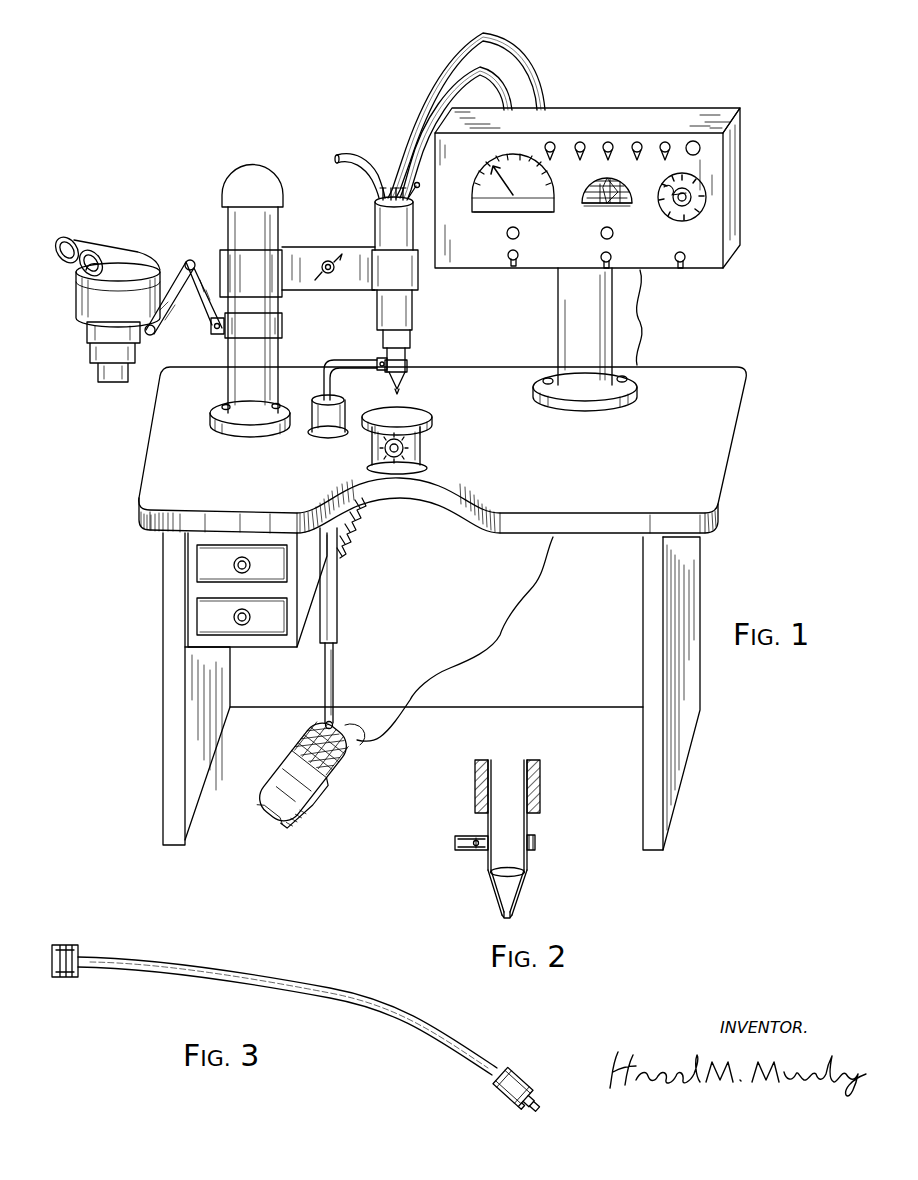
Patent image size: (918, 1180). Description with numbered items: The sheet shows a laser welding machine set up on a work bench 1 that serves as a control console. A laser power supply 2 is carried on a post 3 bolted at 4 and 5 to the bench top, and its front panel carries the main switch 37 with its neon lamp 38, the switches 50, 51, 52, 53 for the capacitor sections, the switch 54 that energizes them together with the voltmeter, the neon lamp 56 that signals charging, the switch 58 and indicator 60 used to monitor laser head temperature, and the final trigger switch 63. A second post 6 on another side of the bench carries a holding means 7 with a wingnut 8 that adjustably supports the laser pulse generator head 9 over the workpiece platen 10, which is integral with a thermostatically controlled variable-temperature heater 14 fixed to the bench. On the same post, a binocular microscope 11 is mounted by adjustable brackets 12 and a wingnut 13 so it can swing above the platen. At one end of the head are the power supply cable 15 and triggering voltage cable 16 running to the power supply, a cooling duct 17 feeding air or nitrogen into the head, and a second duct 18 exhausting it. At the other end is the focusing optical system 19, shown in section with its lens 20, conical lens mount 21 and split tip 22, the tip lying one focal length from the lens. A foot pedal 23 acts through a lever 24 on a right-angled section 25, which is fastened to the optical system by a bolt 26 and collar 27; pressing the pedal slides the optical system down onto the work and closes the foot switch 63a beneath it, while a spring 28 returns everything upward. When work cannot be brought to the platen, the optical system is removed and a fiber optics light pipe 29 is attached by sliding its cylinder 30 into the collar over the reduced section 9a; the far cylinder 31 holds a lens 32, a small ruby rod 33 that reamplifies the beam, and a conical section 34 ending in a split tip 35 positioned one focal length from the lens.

In FIG. 1, the work bench 1 is at (660, 482).
In FIG. 1, the laser power supply 2 is at (740, 240).
In FIG. 1, the post 3 is at (571, 320).
In FIG. 1, the bolt 4 is at (627, 380).
In FIG. 1, the bolt 5 is at (535, 394).
In FIG. 1, the second post 6 is at (235, 385).
In FIG. 1, the holding means 7 is at (322, 262).
In FIG. 1, the wingnut 8 is at (329, 275).
In FIG. 1, the laser pulse generator head 9 is at (413, 310).
In FIG. 1, the reduced section of laser head 9a is at (410, 338).
In FIG. 2, the reduced section of laser head 9a is at (542, 783).
In FIG. 1, the workpiece platen 10 is at (433, 415).
In FIG. 1, the binocular microscope 11 is at (77, 298).
In FIG. 1, the adjustable brackets 12 is at (183, 262).
In FIG. 1, the wingnut 13 is at (210, 330).
In FIG. 1, the thermostatically controlled variable-temperature heater 14 is at (406, 447).
In FIG. 1, the power supply cable 15 is at (462, 46).
In FIG. 1, the laser triggering voltage cable 16 is at (508, 88).
In FIG. 1, the laser cooling duct 17 is at (357, 160).
In FIG. 1, the second duct 18 is at (419, 193).
In FIG. 1, the laser beam focusing optical system 19 is at (406, 352).
In FIG. 2, the laser beam focusing optical system 19 is at (531, 822).
In FIG. 2, the lens 20 is at (520, 877).
In FIG. 1, the conical lens mount 21 is at (404, 380).
In FIG. 1, the split tip 22 is at (401, 391).
In FIG. 2, the split tip 22 is at (513, 916).
In FIG. 1, the foot pedal 23 is at (298, 753).
In FIG. 1, the lever 24 is at (336, 595).
In FIG. 1, the right-angled section 25 is at (334, 388).
In FIG. 2, the right-angled section 25 is at (468, 853).
In FIG. 1, the bolt 26 is at (378, 359).
In FIG. 1, the collar 27 is at (408, 366).
In FIG. 2, the collar 27 is at (537, 846).
In FIG. 1, the spring 28 is at (360, 542).
In FIG. 3, the fiber optics light pipe 29 is at (309, 981).
In FIG. 3, the cylinder 30 is at (72, 947).
In FIG. 3, the cylinder 31 is at (520, 1082).
In FIG. 3, the lens 32 is at (541, 1104).
In FIG. 3, the ruby rod 33 is at (504, 1100).
In FIG. 3, the conical section 34 is at (523, 1110).
In FIG. 3, the split tip 35 is at (538, 1116).
In FIG. 1, the main switch 37 is at (519, 255).
In FIG. 1, the neon lamp 38 is at (520, 233).
In FIG. 1, the switch 50 is at (552, 142).
In FIG. 1, the switch 51 is at (582, 142).
In FIG. 1, the switch 52 is at (610, 142).
In FIG. 1, the switch 53 is at (639, 142).
In FIG. 1, the switch 54 is at (668, 140).
In FIG. 1, the neon lamp 56 is at (702, 148).
In FIG. 1, the switch 58 is at (686, 257).
In FIG. 1, the indicator 60 is at (618, 185).
In FIG. 1, the trigger switch 63 is at (612, 257).
In FIG. 1, the foot switch 63a is at (614, 233).